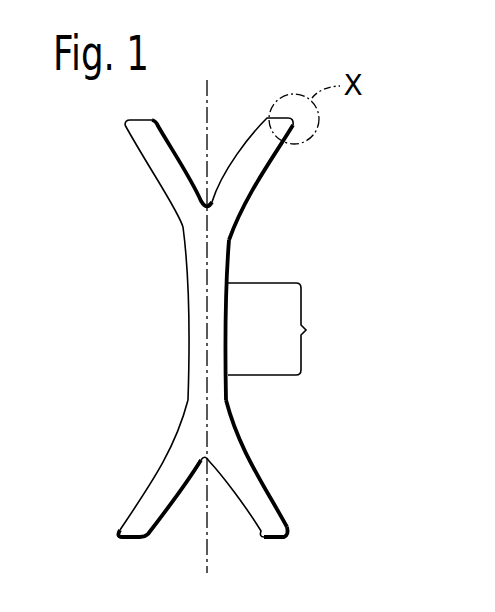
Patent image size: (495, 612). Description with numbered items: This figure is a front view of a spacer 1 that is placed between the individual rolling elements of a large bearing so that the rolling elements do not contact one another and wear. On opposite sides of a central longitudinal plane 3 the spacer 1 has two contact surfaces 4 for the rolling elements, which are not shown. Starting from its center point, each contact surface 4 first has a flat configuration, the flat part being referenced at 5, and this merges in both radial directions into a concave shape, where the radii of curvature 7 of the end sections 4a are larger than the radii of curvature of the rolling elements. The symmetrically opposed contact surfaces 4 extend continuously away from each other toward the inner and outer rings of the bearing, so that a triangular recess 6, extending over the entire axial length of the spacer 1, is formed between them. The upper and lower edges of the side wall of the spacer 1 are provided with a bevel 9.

The spacer 1 is at (223, 325).
The central longitudinal plane 3 is at (209, 97).
The contact surfaces 4 is at (178, 252).
The end sections 4a is at (288, 155).
The flat part of the contact surface 5 is at (278, 329).
The triangular recess 6 is at (196, 163).
The radii of curvature 7 is at (268, 181).
The bevel 9 is at (293, 127).